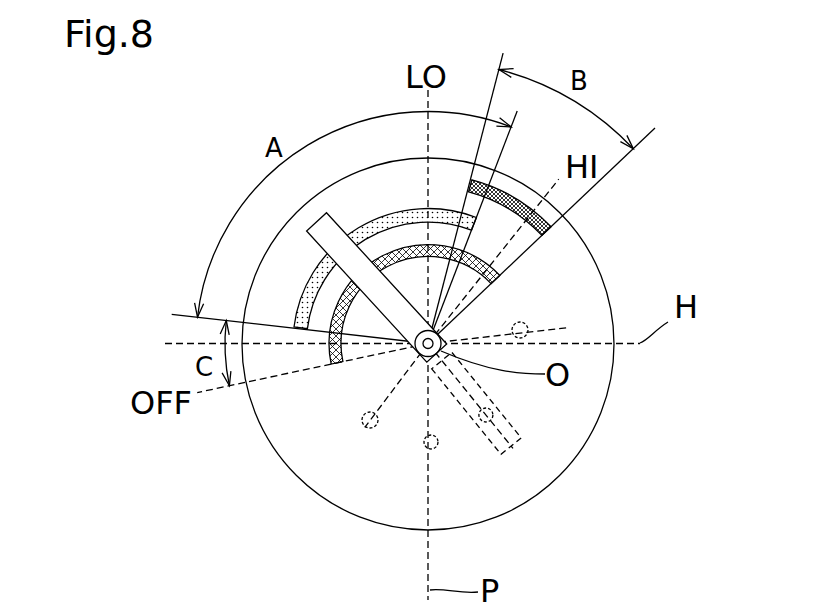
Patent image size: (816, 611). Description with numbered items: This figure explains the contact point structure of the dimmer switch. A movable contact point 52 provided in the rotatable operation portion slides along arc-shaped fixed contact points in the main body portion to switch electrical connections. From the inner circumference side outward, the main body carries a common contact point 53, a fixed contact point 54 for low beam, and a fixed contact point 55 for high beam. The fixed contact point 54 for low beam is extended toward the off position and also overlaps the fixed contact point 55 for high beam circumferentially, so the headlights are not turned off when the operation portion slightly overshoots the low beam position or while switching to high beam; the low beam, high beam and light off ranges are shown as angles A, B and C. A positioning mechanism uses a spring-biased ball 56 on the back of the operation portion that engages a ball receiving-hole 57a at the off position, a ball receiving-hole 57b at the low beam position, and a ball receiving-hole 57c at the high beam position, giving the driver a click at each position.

The movable contact point 52 is at (333, 237).
The common contact point 53 is at (323, 320).
The fixed contact point for low beam 54 is at (313, 272).
The fixed contact point for high beam 55 is at (548, 210).
The ball 56 is at (500, 422).
The ball receiving-hole 57a is at (531, 329).
The ball receiving-hole 57b is at (422, 441).
The ball receiving-hole 57c is at (361, 420).